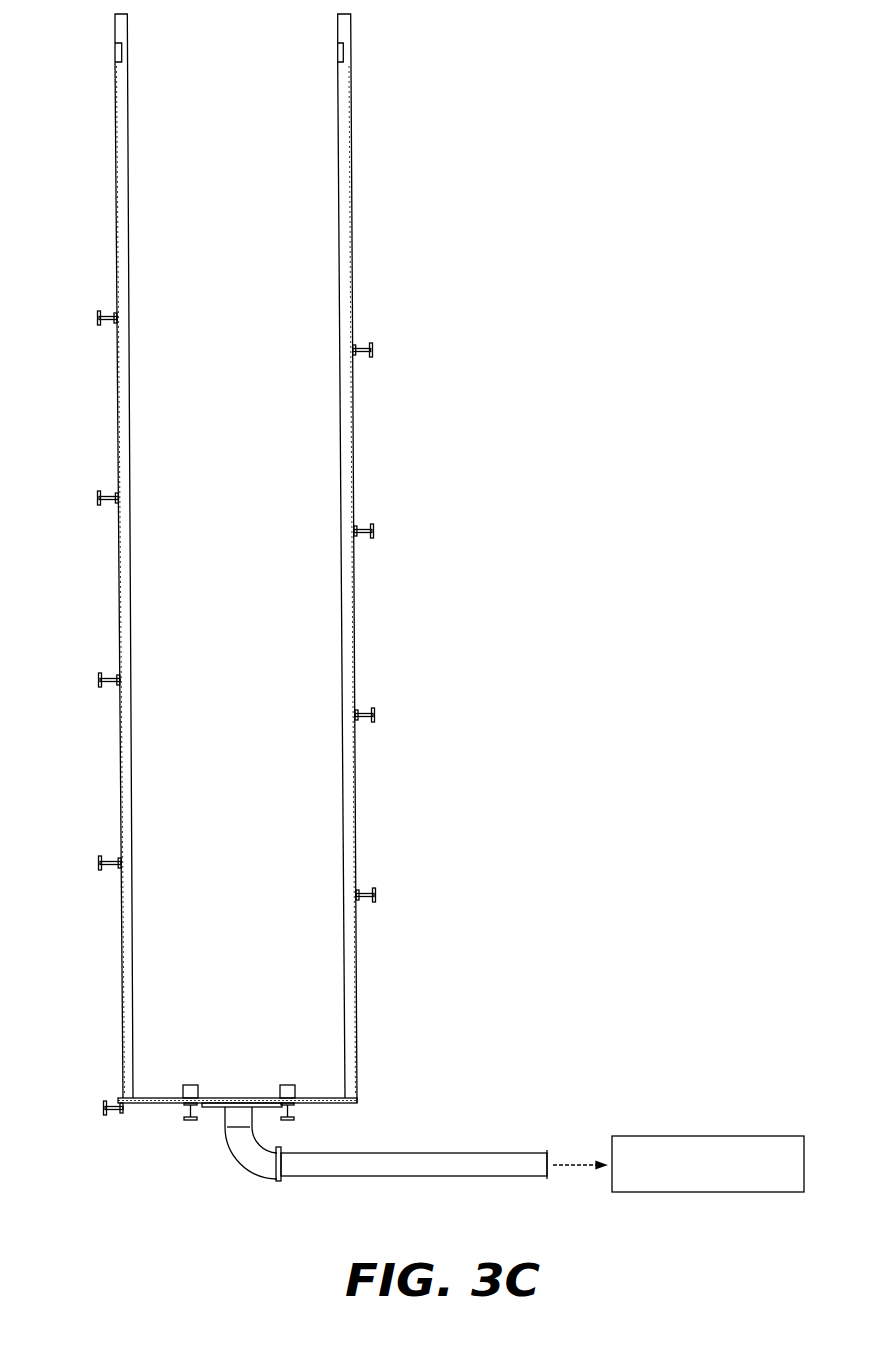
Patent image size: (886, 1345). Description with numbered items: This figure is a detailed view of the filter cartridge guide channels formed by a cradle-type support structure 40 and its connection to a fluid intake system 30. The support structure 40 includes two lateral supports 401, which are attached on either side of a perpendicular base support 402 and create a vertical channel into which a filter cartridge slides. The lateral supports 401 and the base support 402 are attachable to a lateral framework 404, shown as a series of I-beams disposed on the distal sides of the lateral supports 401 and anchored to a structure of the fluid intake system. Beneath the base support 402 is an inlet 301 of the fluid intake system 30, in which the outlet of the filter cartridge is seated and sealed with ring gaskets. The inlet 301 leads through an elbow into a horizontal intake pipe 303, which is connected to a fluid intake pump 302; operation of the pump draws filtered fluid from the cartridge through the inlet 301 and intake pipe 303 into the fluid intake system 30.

The support structure 40 is at (417, 420).
The lateral supports 401 is at (119, 607).
The base support 402 is at (310, 1098).
The lateral framework 404 is at (96, 318).
The fluid intake system 30 is at (450, 1132).
The inlet 301 is at (233, 1122).
The fluid intake pump 302 is at (710, 1137).
The intake pipes 303 is at (258, 1163).